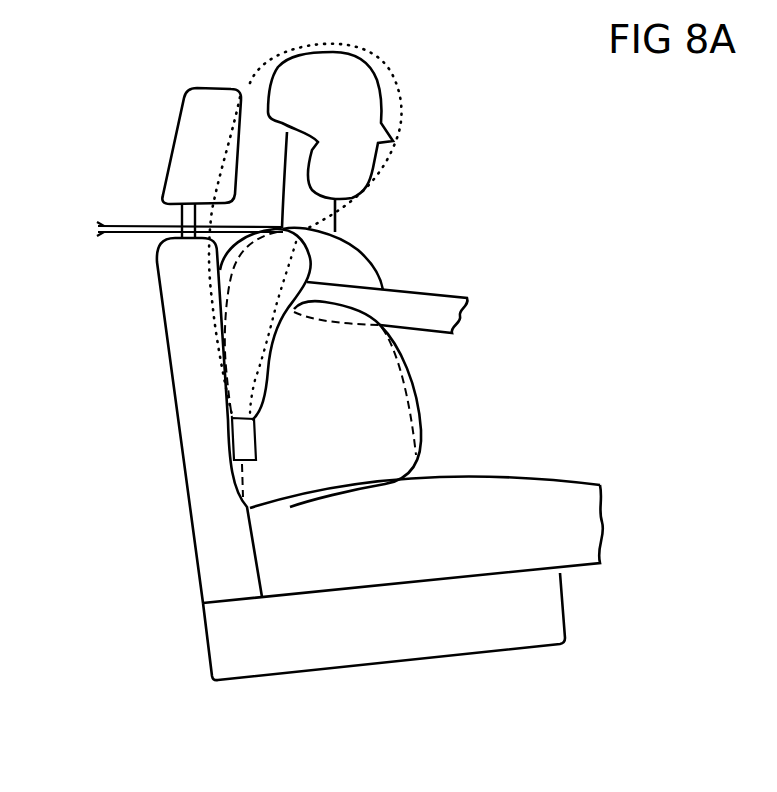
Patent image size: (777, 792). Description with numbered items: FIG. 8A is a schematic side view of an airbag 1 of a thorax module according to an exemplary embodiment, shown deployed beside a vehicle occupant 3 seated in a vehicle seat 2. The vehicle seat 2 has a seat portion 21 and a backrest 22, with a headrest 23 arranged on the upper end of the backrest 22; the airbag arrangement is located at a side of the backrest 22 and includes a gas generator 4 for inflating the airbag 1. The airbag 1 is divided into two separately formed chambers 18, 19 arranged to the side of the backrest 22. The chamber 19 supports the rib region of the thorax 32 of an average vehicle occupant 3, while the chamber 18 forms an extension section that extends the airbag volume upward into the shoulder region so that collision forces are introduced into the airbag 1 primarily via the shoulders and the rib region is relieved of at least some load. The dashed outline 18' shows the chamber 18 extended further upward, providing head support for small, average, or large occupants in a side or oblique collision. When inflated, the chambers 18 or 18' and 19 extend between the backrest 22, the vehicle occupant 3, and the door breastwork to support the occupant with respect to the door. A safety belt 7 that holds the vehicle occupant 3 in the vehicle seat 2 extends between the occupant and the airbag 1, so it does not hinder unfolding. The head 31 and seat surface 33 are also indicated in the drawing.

The airbag 1 is at (420, 76).
The vehicle seat 2 is at (410, 670).
The vehicle occupant 3 is at (450, 490).
The gas generator 4 is at (243, 442).
The safety belt 7 is at (128, 223).
The chamber 18 is at (200, 363).
The chamber 18' is at (300, 223).
The chamber 19 is at (378, 389).
The seat portion 21 is at (238, 643).
The backrest 22 is at (225, 552).
The headrest 23 is at (188, 172).
The head of occupant 31 is at (355, 107).
The thorax 32 is at (358, 266).
The seat surface 33 is at (418, 530).